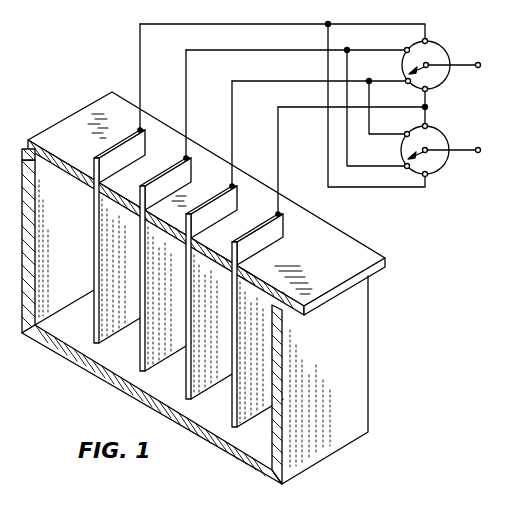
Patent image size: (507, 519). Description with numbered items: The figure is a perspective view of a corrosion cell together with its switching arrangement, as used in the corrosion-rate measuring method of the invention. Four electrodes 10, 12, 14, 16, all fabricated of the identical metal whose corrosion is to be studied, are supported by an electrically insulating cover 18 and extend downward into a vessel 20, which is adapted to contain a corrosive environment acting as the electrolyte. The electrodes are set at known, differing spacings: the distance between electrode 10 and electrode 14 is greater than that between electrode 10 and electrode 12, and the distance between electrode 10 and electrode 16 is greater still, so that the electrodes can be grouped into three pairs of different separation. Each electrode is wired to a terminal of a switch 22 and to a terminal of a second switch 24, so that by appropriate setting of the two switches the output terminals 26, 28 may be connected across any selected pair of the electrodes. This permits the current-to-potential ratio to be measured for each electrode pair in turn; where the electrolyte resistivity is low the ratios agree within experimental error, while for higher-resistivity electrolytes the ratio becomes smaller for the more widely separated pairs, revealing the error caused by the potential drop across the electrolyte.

The electrode 10 is at (233, 404).
The electrode 12 is at (187, 378).
The electrode 14 is at (141, 349).
The electrode 16 is at (94, 318).
The electrically insulating cover 18 is at (379, 250).
The vessel 20 is at (369, 327).
The switch 22 is at (443, 47).
The switch 24 is at (438, 170).
The terminal 26 is at (480, 67).
The terminal 28 is at (479, 148).